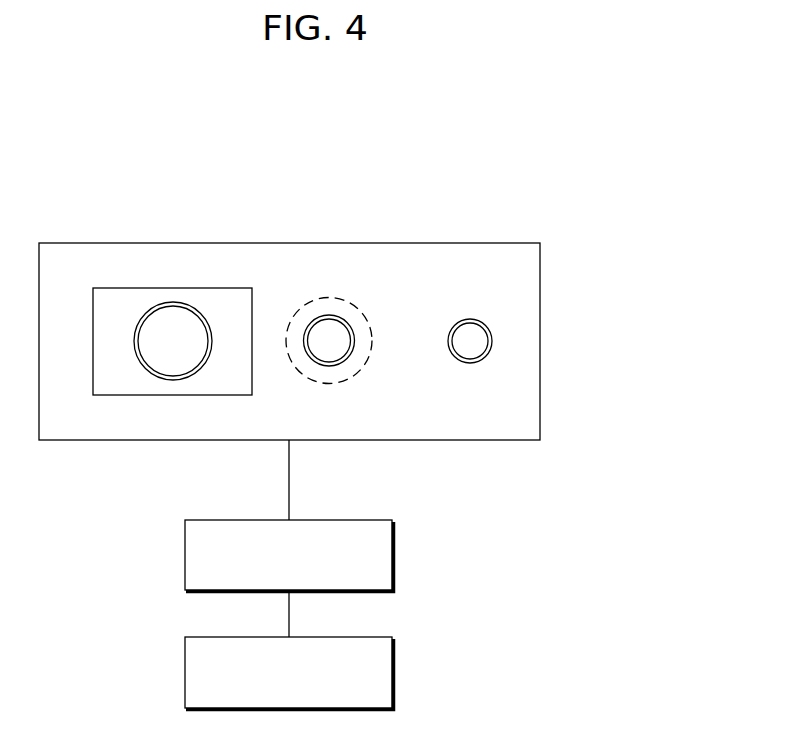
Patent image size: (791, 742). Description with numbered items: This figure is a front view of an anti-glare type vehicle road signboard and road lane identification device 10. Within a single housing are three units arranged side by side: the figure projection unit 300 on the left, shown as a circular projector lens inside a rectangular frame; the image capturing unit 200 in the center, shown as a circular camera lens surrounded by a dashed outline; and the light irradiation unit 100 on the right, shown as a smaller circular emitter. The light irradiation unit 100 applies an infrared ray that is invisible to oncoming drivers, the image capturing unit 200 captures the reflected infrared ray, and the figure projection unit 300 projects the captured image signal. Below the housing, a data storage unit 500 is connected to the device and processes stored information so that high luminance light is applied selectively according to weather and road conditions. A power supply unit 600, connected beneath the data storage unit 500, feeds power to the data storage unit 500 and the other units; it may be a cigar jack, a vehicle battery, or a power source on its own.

The anti-glare type vehicle road signboard and road lane identification device 10 is at (86, 116).
The light irradiation unit 100 is at (478, 342).
The image capturing unit 200 is at (330, 330).
The figure projection unit 300 is at (173, 320).
The data storage unit 500 is at (393, 554).
The power supply unit 600 is at (393, 676).